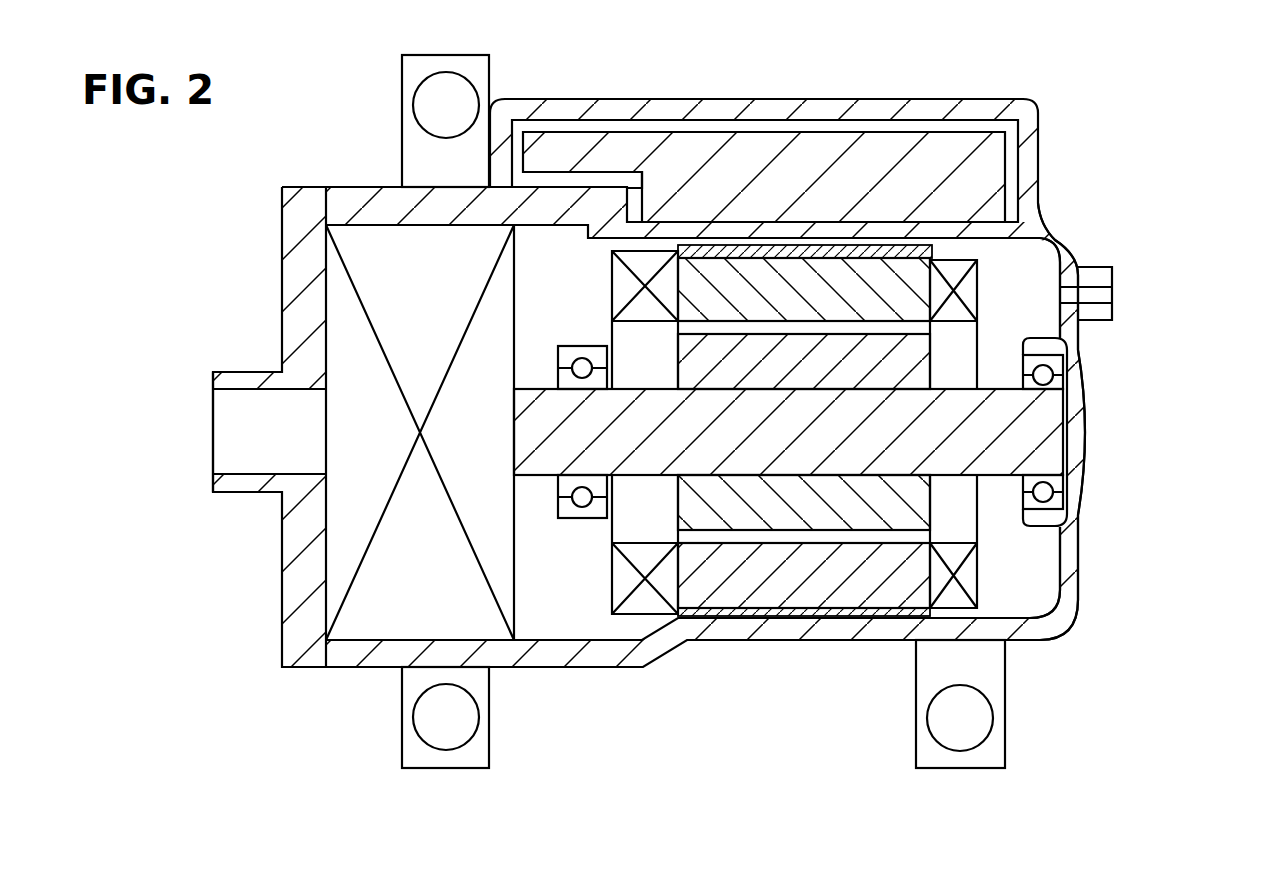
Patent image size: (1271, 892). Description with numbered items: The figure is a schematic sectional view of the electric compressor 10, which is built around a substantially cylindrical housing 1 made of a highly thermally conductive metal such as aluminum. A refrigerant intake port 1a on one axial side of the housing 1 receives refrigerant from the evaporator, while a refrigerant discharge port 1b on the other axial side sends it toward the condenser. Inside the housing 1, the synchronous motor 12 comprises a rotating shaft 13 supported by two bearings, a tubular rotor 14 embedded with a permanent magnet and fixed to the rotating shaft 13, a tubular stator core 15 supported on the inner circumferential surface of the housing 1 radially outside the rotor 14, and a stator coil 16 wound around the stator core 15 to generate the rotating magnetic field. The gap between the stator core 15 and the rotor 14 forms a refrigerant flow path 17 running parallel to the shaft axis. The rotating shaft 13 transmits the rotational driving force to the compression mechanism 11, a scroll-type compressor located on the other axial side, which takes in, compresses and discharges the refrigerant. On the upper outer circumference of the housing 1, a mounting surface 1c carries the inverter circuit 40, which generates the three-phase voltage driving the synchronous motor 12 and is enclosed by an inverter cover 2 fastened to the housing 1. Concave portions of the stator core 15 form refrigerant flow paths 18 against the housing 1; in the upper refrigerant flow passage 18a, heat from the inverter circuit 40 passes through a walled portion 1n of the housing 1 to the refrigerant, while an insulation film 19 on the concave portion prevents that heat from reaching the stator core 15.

The housing 1 is at (282, 647).
The refrigerant intake port 1a is at (1112, 295).
The refrigerant discharge port 1b is at (212, 458).
The mounting surface 1c is at (960, 222).
The walled portion 1n is at (869, 232).
The inverter cover 2 is at (1017, 113).
The electric compressor 10 is at (277, 716).
The compression mechanism 11 is at (370, 598).
The synchronous motor 12 is at (623, 750).
The rotating shaft 13 is at (788, 450).
The rotor 14 is at (755, 512).
The stator core 15 is at (710, 590).
The stator coil 16 is at (640, 600).
The refrigerant flow path 17 is at (913, 328).
The refrigerant flow path 18 is at (913, 613).
The refrigerant flow passage 18a is at (928, 242).
The insulation film 19 is at (917, 255).
The inverter circuit 40 is at (933, 165).